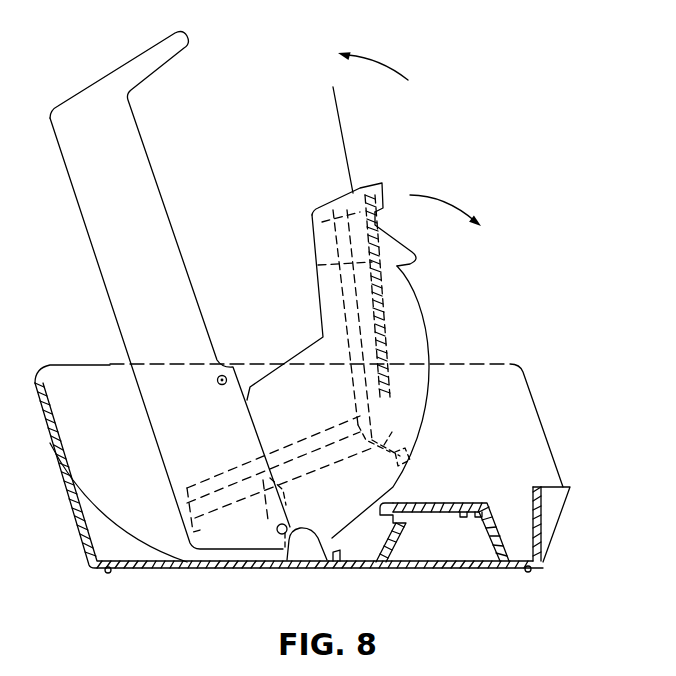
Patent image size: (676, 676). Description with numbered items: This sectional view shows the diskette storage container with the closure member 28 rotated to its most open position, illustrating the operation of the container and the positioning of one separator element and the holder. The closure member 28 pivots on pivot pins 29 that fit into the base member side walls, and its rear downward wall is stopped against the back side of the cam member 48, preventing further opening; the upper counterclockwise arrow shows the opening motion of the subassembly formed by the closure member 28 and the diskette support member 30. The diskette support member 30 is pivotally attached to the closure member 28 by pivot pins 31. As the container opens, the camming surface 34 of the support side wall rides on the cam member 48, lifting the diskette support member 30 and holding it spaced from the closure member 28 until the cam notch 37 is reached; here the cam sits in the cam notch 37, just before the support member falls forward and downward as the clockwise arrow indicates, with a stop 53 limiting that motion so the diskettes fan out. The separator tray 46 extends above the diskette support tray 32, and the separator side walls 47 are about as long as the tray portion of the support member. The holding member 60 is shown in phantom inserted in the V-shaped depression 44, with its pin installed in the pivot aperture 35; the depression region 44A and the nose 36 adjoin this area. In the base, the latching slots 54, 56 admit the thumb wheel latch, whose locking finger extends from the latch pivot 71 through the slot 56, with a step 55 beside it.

The closure member 28 is at (83, 95).
The pivot pins 29 is at (221, 365).
The diskette support member 30 is at (379, 355).
The pivot pins 31 is at (270, 532).
The diskette support tray 32 is at (312, 256).
The camming surface 34 is at (426, 330).
The pivot aperture 35 is at (280, 497).
The latch nose 36 is at (414, 254).
The cam notch 37 is at (340, 542).
The V-shaped depression 44 is at (420, 393).
The hinge tab 44A is at (410, 460).
The tray 46 is at (342, 134).
The side walls 47 is at (317, 212).
The cam member 48 is at (283, 550).
The stop 53 is at (334, 560).
The latching slot 54 is at (487, 512).
The keeper step 55 is at (463, 505).
The latching slot 56 is at (385, 504).
The holding member 60 is at (296, 425).
The latch pivot 71 is at (468, 518).